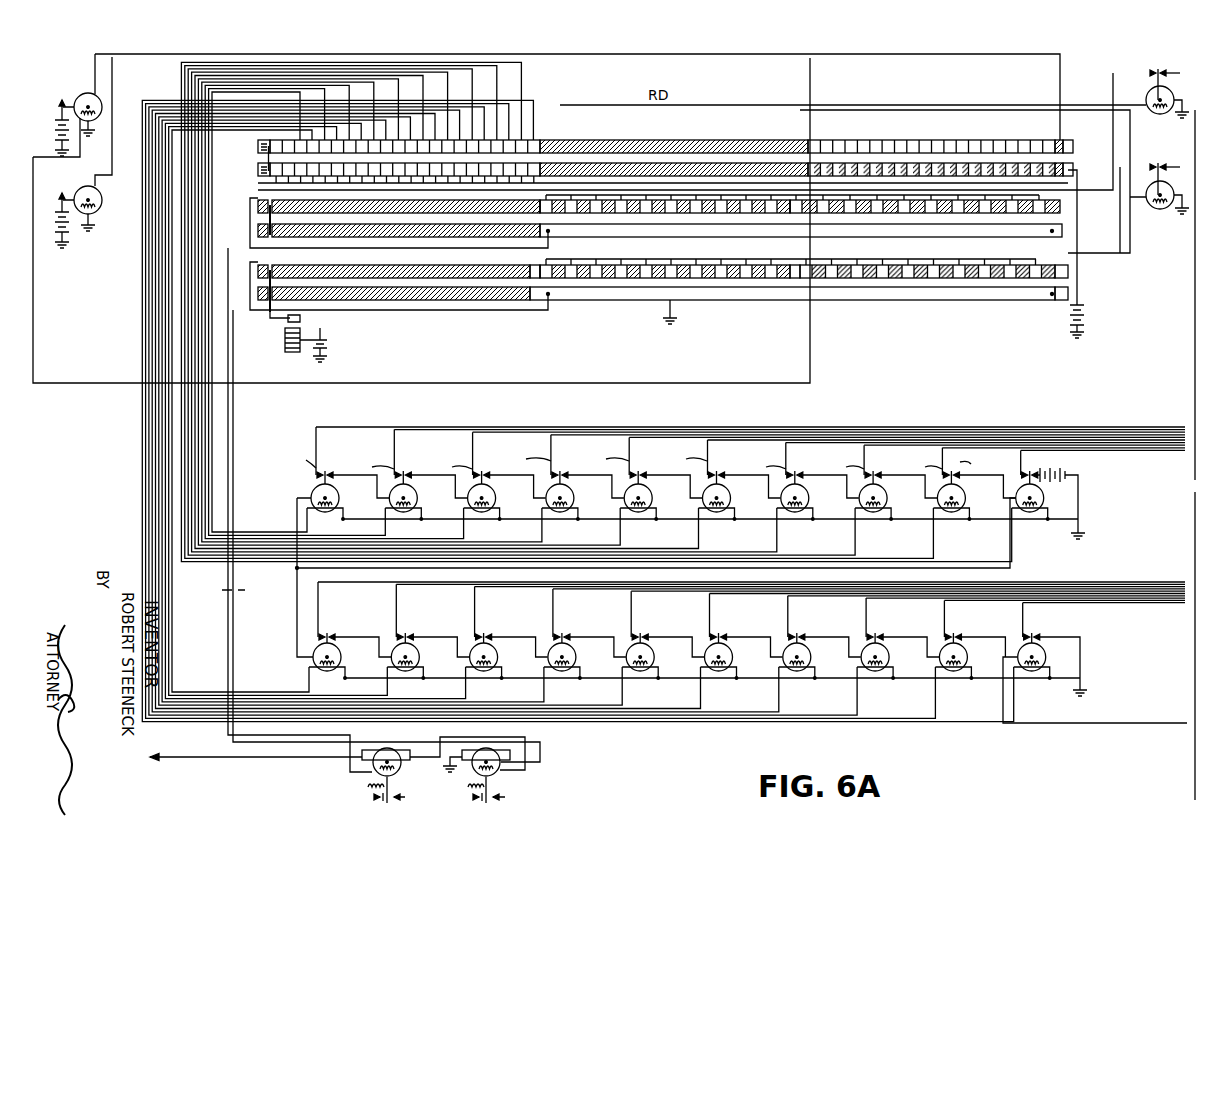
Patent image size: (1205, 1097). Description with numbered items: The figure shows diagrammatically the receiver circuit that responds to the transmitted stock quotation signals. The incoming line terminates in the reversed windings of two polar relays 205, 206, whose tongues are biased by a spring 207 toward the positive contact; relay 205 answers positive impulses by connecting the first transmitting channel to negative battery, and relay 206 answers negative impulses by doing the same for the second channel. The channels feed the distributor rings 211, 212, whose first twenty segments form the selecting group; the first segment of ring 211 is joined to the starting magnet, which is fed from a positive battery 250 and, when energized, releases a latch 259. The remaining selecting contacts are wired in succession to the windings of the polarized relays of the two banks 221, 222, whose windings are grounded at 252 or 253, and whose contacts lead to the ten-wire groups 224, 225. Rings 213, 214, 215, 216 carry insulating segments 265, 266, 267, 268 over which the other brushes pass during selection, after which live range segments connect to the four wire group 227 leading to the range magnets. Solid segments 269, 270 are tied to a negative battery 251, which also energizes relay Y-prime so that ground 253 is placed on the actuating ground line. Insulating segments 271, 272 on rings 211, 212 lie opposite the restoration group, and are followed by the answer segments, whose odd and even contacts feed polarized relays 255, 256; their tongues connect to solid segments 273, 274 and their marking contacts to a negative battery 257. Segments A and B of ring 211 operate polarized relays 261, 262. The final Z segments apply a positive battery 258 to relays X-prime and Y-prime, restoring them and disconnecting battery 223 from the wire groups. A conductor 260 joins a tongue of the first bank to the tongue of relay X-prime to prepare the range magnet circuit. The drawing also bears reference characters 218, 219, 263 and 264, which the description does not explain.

The polar relay 205 is at (494, 773).
The polar relay 206 is at (400, 773).
The spring 207 is at (368, 790).
The ring 211 is at (1074, 146).
The ring 212 is at (1074, 169).
The ring 213 is at (1065, 207).
The ring 214 is at (683, 230).
The ring 215 is at (1070, 271).
The ring 216 is at (683, 293).
The conductor cable 218 is at (210, 398).
The conductor cable 219 is at (152, 335).
The group of polarized relays 221 is at (679, 490).
The group of polarized relays 222 is at (695, 652).
The battery 223 is at (1064, 475).
The group of wires 224 is at (1026, 430).
The group of wires 225 is at (1050, 588).
The four wire group 227 is at (1190, 258).
The battery 250 is at (325, 342).
The negative battery 251 is at (676, 317).
The ground 252 is at (1070, 538).
The ground 253 is at (1070, 700).
The polarized relay 255 is at (102, 207).
The polarized relay 256 is at (78, 96).
The battery 257 is at (54, 122).
The positive battery 258 is at (1080, 322).
The latch 259 is at (301, 320).
The conductor 260 is at (963, 568).
The polarized relay 261 is at (1146, 97).
The polarized relay 262 is at (1160, 210).
The contact 263 is at (1151, 71).
The contact 264 is at (1154, 163).
The insulating segment 265 is at (490, 207).
The insulating segment 266 is at (480, 232).
The insulating segment 267 is at (515, 270).
The insulating segment 268 is at (440, 297).
The solid segment 269 is at (724, 230).
The solid segment 270 is at (724, 293).
The insulating segment 271 is at (642, 142).
The insulating segment 272 is at (698, 170).
The solid segment 273 is at (924, 230).
The solid segment 274 is at (924, 293).